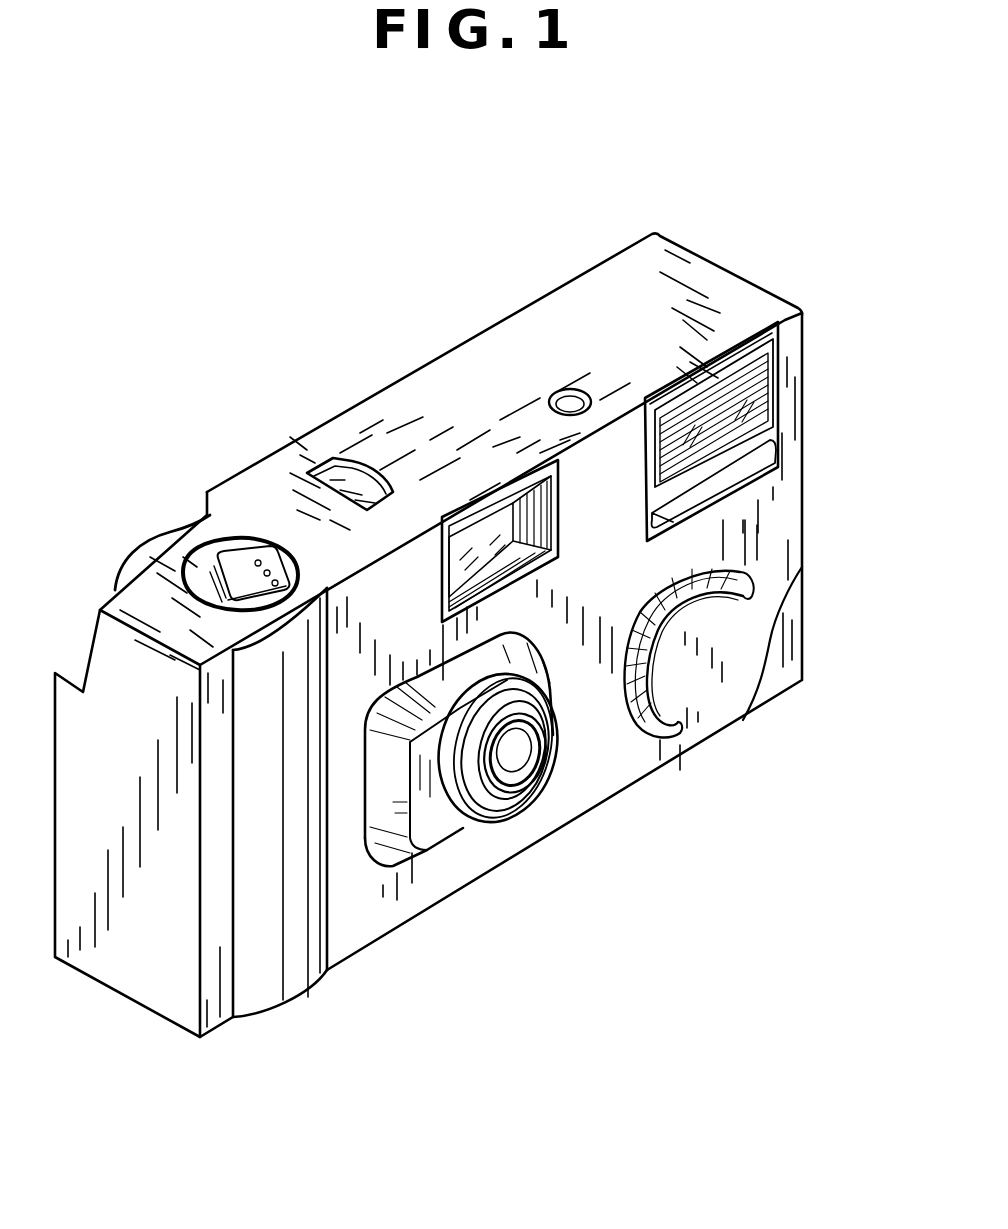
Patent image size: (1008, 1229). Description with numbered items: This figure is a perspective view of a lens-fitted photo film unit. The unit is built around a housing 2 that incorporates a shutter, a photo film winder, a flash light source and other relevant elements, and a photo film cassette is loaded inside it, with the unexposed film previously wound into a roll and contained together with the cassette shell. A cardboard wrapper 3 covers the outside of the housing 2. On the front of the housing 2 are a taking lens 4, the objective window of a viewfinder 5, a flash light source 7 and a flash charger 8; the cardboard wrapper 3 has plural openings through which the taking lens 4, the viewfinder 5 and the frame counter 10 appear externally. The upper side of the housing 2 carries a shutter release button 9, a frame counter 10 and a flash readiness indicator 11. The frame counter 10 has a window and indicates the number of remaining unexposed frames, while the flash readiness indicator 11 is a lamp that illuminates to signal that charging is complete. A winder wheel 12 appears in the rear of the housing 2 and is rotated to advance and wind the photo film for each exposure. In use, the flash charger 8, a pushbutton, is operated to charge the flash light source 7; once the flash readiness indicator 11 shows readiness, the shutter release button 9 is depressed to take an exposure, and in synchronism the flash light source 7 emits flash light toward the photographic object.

The housing 2 is at (797, 647).
The cardboard wrapper 3 is at (784, 524).
The taking lens 4 is at (530, 748).
The objective window of a viewfinder 5 is at (593, 552).
The flash light source 7 is at (781, 377).
The flash charger 8 is at (728, 682).
The shutter release button 9 is at (248, 563).
The frame counter 10 is at (353, 492).
The flash readiness indicator 11 is at (570, 392).
The winder wheel 12 is at (142, 545).